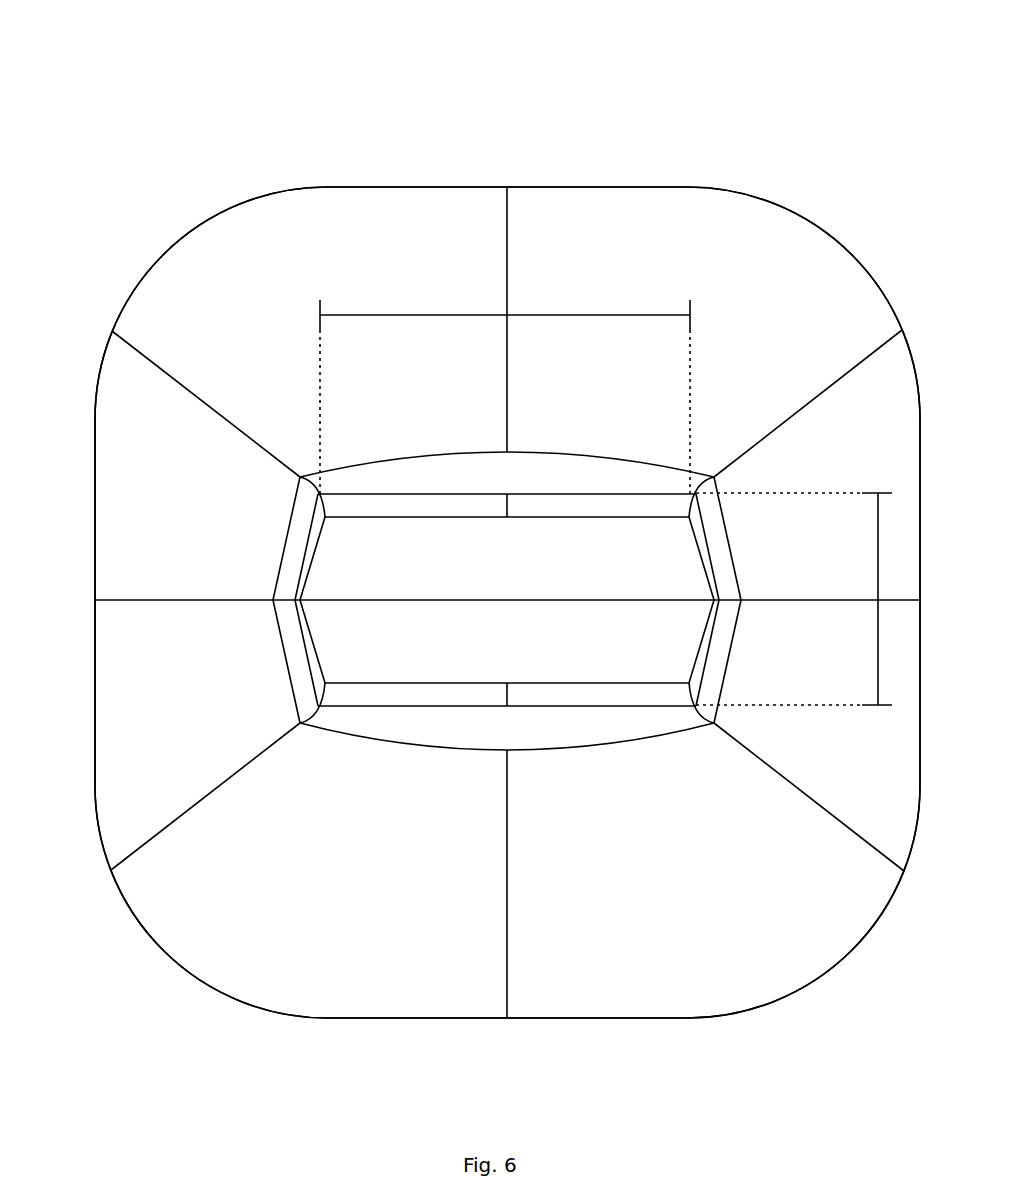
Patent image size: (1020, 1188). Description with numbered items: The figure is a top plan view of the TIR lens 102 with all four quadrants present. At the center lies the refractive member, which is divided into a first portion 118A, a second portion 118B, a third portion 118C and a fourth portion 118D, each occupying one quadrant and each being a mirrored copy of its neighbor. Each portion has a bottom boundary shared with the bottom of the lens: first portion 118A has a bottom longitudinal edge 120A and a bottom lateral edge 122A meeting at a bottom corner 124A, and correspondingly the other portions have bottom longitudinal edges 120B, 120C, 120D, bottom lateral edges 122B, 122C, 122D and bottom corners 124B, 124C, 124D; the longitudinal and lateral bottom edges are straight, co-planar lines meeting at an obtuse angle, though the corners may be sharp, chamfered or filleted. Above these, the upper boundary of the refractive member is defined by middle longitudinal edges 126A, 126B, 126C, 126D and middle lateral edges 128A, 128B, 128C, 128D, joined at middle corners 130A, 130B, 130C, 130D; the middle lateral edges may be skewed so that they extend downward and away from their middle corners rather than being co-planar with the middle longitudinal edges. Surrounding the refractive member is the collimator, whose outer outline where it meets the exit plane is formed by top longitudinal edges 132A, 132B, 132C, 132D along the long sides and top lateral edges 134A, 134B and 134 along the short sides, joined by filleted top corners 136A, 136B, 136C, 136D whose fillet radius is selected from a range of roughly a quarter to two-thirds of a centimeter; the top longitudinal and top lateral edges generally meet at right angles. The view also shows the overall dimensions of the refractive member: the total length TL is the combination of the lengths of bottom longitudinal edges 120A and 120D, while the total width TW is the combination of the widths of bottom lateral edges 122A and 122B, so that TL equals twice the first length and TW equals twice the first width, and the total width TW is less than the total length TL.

The TIR lens 102 is at (790, 90).
The first portion 118A is at (420, 575).
The second portion 118B is at (420, 645).
The third portion 118C is at (640, 645).
The fourth portion 118D is at (640, 575).
The bottom longitudinal edge 120A is at (460, 494).
The bottom longitudinal edge 120B is at (460, 707).
The bottom longitudinal edge 120C is at (553, 707).
The bottom longitudinal edge 120D is at (553, 494).
The bottom lateral edge 122A is at (310, 527).
The bottom lateral edge 122B is at (310, 673).
The bottom lateral edge 122C is at (704, 673).
The bottom lateral edge 122D is at (704, 527).
The bottom corner 124A is at (300, 477).
The bottom corner 124B is at (300, 723).
The bottom corner 124C is at (714, 723).
The bottom corner 124D is at (714, 477).
The middle longitudinal edge 126A is at (423, 517).
The middle longitudinal edge 126B is at (417, 683).
The middle longitudinal edge 126C is at (598, 683).
The middle longitudinal edge 126D is at (594, 517).
The middle lateral edge 128A is at (308, 548).
The middle lateral edge 128B is at (308, 652).
The middle lateral edge 128C is at (706, 652).
The middle lateral edge 128D is at (706, 548).
The middle corner 130A is at (316, 500).
The middle corner 130B is at (316, 700).
The middle corner 130C is at (698, 700).
The middle corner 130D is at (698, 501).
The top longitudinal edge 132A is at (408, 187).
The top longitudinal edge 132B is at (408, 1018).
The top longitudinal edge 132C is at (606, 1018).
The top longitudinal edge 132D is at (606, 187).
The top lateral edge 134 is at (920, 473).
The top lateral edge 134A is at (95, 475).
The top lateral edge 134B is at (95, 725).
The top corner 136A is at (173, 247).
The top corner 136B is at (173, 955).
The top corner 136C is at (840, 957).
The top corner 136D is at (841, 247).
The total length TL is at (523, 315).
The total width TW is at (877, 533).